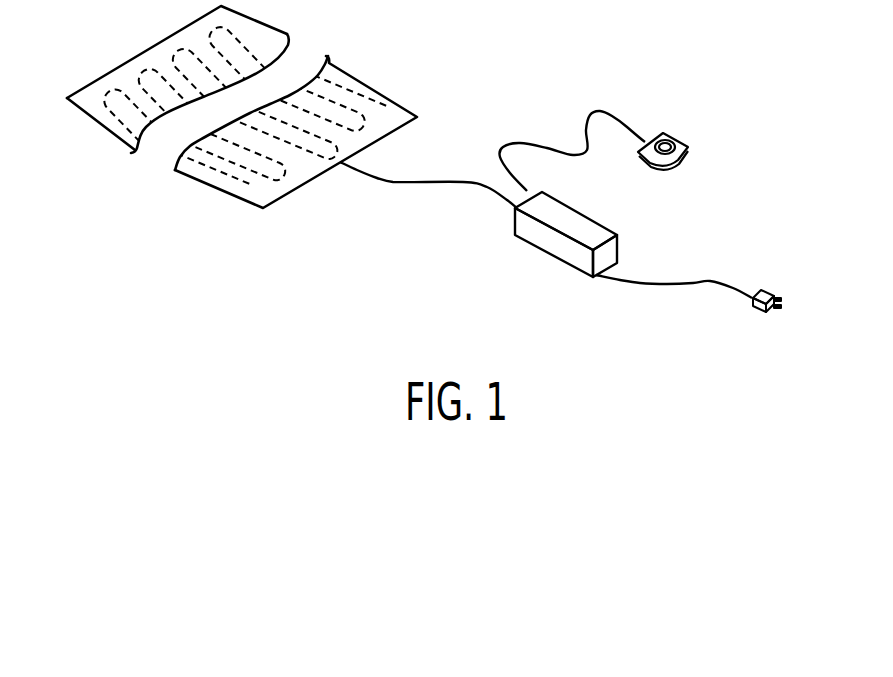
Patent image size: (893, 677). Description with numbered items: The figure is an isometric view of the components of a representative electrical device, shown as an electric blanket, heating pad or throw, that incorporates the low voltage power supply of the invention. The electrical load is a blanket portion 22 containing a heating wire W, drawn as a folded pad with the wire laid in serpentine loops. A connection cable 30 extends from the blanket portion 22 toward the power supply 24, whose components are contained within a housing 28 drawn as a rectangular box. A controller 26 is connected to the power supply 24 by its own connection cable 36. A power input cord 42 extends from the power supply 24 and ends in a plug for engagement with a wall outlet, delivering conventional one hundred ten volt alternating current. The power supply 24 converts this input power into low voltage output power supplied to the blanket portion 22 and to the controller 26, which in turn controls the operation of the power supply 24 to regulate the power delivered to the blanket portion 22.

The blanket portion 22 is at (242, 150).
The heating wire W is at (105, 127).
The connection cable 30 is at (424, 184).
The power supply 24 is at (640, 177).
The housing 28 is at (615, 222).
The connection cable 36 is at (627, 122).
The controller 26 is at (697, 139).
The power input cord 42 is at (710, 280).